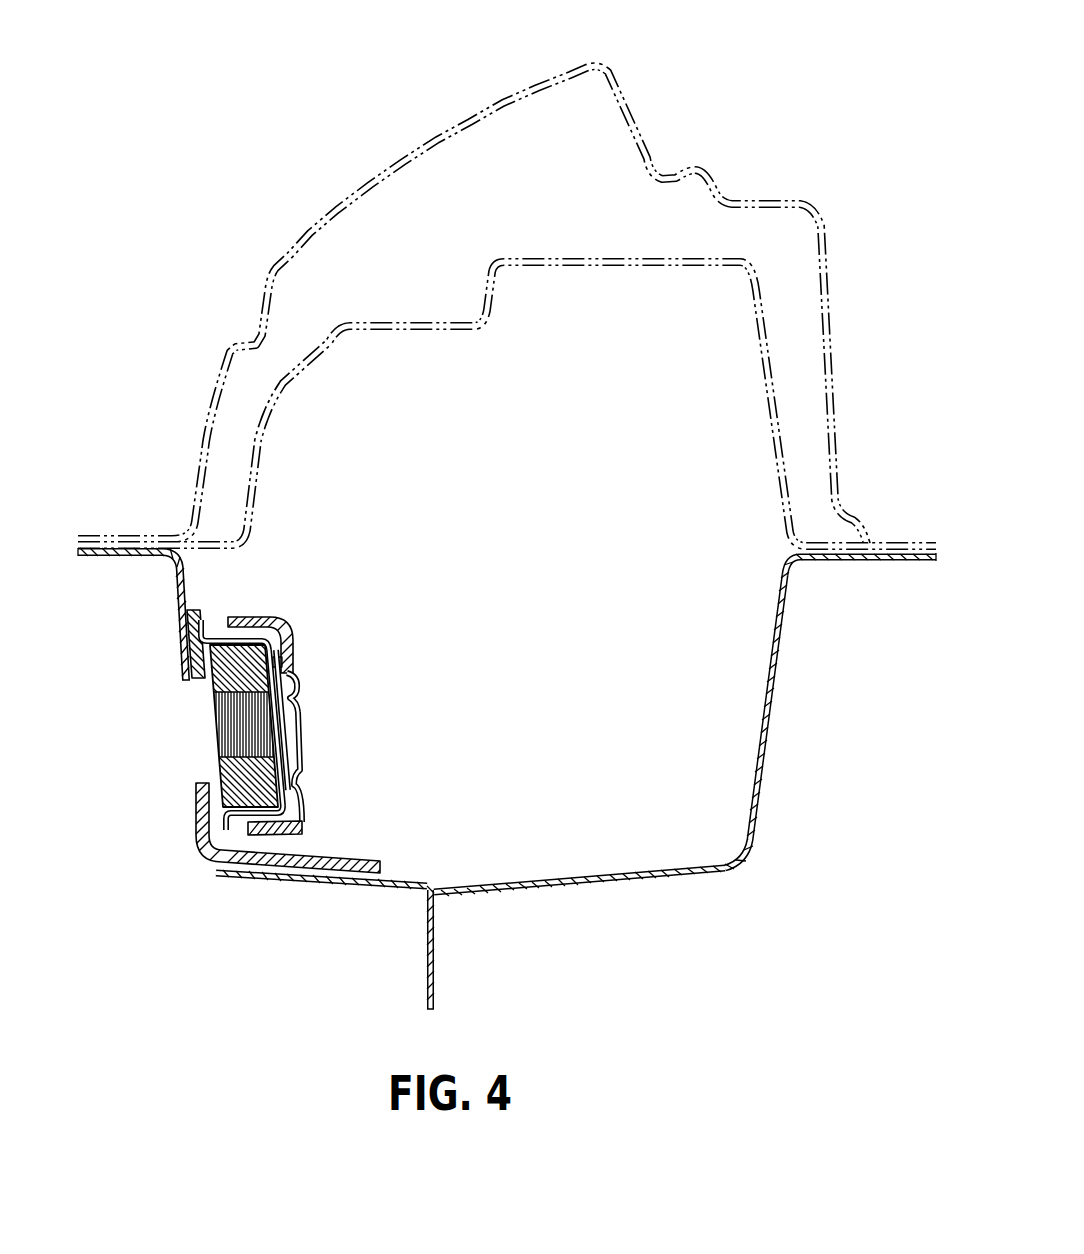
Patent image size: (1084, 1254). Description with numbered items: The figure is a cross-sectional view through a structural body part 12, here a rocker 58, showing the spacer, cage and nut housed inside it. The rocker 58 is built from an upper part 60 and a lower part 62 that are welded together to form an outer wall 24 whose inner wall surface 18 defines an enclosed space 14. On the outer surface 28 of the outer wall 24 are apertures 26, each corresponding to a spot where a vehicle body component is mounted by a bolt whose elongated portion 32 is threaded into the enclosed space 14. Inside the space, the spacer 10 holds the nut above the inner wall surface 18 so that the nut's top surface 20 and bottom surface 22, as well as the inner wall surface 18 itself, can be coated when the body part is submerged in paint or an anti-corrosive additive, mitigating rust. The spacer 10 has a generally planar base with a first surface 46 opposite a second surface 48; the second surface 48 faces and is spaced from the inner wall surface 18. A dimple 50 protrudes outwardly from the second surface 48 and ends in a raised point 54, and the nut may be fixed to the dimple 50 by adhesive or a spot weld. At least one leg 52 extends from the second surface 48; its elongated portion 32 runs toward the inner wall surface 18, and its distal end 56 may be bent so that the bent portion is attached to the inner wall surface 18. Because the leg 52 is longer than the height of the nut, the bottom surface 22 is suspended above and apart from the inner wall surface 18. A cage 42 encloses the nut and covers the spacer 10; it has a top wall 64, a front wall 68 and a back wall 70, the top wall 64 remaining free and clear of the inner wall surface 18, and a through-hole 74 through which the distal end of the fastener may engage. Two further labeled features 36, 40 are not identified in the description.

The structural body part 12 is at (479, 275).
The rocker 58 is at (479, 275).
The upper part 60 is at (798, 203).
The enclosed space 14 is at (746, 375).
The outer wall 24 is at (576, 781).
The lower part 62 is at (769, 732).
The outer surface 28 is at (178, 638).
The inner wall surface 18 is at (203, 628).
The spacer 10 is at (214, 693).
The apertures 26 is at (211, 693).
The flocking / pile 40 is at (233, 730).
The carrier 36 is at (279, 746).
The point 54 is at (268, 638).
The leg 52 is at (281, 866).
The elongated portion 32 is at (240, 840).
The back wall 70 is at (257, 618).
The top wall 64 is at (293, 610).
The cage 42 is at (329, 748).
The top surface 20 is at (329, 748).
The first surface 46 is at (335, 702).
The second surface 48 is at (294, 700).
The dimple 50 is at (291, 661).
The through-hole 74 is at (308, 745).
The front wall 68 is at (288, 834).
The bottom surface 22 is at (215, 793).
The distal end 56 is at (269, 828).